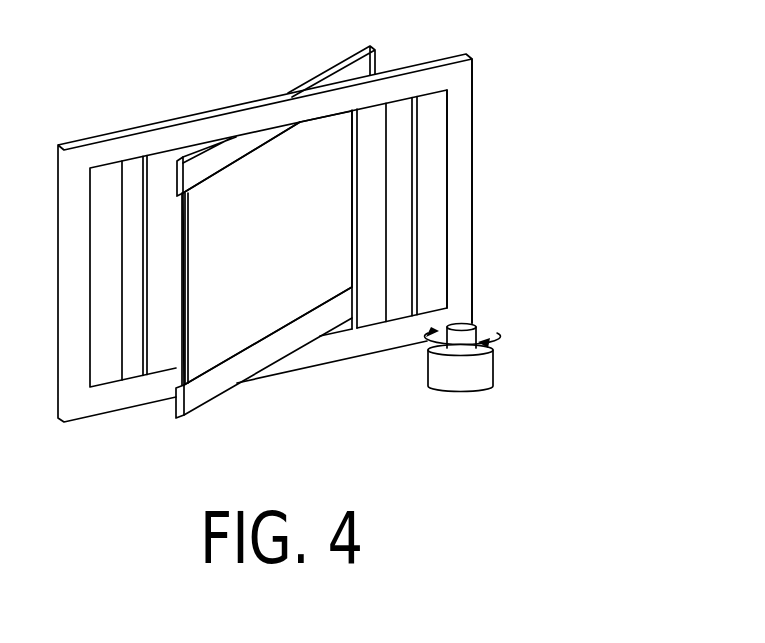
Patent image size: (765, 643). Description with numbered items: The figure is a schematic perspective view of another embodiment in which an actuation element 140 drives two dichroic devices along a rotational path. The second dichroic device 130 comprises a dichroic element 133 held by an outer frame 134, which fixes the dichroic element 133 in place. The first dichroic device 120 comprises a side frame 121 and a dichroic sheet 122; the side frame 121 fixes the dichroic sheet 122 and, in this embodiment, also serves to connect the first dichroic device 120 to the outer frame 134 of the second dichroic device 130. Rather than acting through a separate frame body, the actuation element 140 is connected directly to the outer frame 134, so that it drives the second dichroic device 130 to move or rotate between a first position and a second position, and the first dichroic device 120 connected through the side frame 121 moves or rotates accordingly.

The first dichroic device 120 is at (331, 270).
The side frame 121 is at (215, 380).
The dichroic sheet 122 is at (250, 316).
The second dichroic device 130 is at (381, 238).
The dichroic element 133 is at (427, 175).
The outer frame 134 is at (462, 107).
The actuation element 140 is at (472, 368).